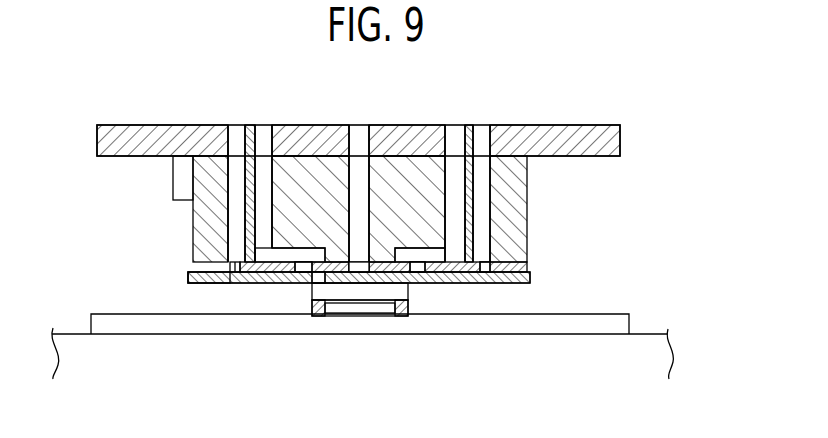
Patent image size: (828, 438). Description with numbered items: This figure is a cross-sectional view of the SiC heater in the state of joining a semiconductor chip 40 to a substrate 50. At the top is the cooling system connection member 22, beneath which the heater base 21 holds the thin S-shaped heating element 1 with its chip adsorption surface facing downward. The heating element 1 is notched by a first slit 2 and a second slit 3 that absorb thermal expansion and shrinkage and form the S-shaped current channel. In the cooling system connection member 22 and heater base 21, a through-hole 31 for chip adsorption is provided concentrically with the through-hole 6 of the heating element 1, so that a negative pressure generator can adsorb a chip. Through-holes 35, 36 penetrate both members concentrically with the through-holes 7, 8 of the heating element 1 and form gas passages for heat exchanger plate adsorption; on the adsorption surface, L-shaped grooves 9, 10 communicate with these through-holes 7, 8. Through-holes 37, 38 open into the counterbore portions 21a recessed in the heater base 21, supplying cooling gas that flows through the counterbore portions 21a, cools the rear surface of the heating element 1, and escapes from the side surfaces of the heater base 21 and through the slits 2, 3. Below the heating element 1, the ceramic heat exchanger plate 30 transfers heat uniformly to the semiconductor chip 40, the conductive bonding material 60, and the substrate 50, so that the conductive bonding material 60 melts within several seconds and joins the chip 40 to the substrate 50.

The heating element 1 is at (517, 266).
The first slit 2 is at (302, 268).
The second slit 3 is at (414, 271).
The through-hole 6 is at (311, 286).
The through-hole 7 is at (230, 264).
The through-hole 8 is at (455, 256).
The groove 9 is at (232, 283).
The groove 10 is at (480, 273).
The heater base 21 is at (515, 190).
The counterbore portion 21a is at (478, 254).
The cooling system connection member 22 is at (630, 128).
The heat exchanger plate 30 is at (530, 281).
The through-hole for chip adsorption 31 is at (360, 128).
The through-hole for heat exchanger plate adsorption 35 is at (240, 128).
The through-hole for heat exchanger plate adsorption 36 is at (481, 128).
The through-hole 37 is at (263, 128).
The through-hole 38 is at (455, 128).
The semiconductor chip 40 is at (395, 292).
The substrate 50 is at (620, 322).
The conductive bonding material 60 is at (400, 315).